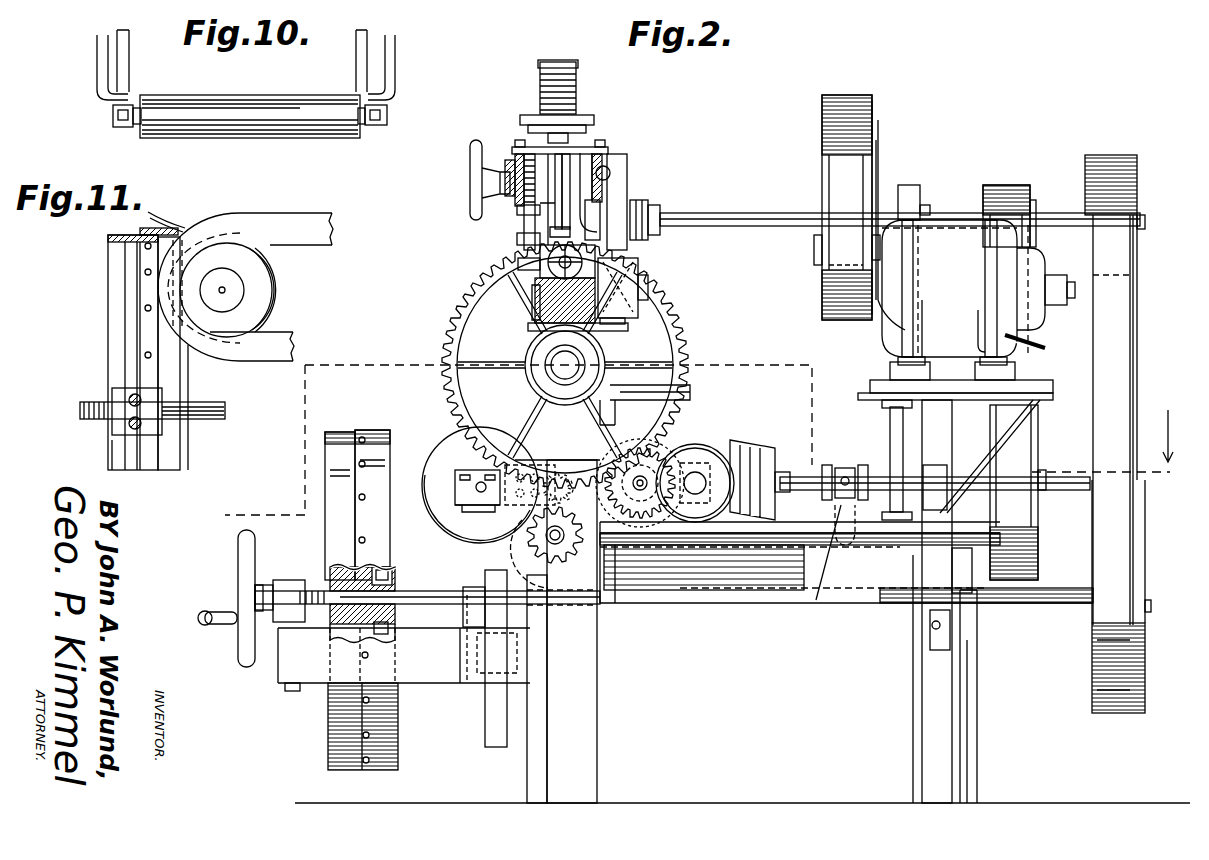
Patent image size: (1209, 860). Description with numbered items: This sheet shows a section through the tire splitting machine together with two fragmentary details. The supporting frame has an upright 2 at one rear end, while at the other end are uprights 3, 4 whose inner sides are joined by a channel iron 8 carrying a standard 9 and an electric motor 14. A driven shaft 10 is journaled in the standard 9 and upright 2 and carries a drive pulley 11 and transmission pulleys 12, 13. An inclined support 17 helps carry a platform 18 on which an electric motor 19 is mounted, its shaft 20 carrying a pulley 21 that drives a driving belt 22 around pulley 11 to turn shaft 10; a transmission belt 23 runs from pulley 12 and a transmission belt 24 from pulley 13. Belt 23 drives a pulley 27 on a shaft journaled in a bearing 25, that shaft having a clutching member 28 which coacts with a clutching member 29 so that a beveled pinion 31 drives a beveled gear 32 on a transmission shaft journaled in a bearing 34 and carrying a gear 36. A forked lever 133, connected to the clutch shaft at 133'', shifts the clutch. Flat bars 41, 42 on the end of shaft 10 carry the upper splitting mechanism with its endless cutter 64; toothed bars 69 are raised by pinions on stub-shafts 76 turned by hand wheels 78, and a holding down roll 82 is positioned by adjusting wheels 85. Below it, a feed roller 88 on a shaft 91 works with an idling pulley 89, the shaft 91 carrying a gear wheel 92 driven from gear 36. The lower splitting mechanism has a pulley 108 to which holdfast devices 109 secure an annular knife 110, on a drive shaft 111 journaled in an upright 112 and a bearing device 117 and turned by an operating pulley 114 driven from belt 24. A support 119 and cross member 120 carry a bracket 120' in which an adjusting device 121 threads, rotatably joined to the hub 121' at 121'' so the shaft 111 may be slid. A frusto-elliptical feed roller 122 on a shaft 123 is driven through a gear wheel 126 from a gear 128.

In FIG. 2, the upright 2 is at (916, 411).
In FIG. 2, the upright 3 is at (693, 444).
In FIG. 2, the upright 4 is at (585, 661).
In FIG. 2, the channel iron 8 is at (690, 386).
In FIG. 2, the standard 9 is at (627, 176).
In FIG. 2, the driven shaft 10 is at (736, 213).
In FIG. 2, the drive pulley 11 is at (873, 148).
In FIG. 2, the transmission pulley 12 is at (1032, 200).
In FIG. 2, the transmission pulley 13 is at (1135, 178).
In FIG. 2, the electric motor 14 is at (640, 286).
In FIG. 2, the support 17 is at (993, 452).
In FIG. 2, the platform 18 is at (1053, 396).
In FIG. 2, the electric motor 19 is at (948, 240).
In FIG. 2, the motor shaft 20 is at (880, 322).
In FIG. 2, the pulley 21 is at (824, 308).
In FIG. 2, the driving belt 22 is at (835, 135).
In FIG. 2, the transmission belt 23 is at (1005, 185).
In FIG. 2, the transmission belt 24 is at (1106, 158).
In FIG. 2, the bearing 25 is at (941, 466).
In FIG. 2, the pulley 27 is at (1030, 536).
In FIG. 2, the clutching member 28 is at (778, 465).
In FIG. 2, the clutching member 29 is at (746, 440).
In FIG. 2, the beveled pinion 31 is at (699, 462).
In FIG. 2, the beveled gear 32 is at (662, 458).
In FIG. 2, the bearing 34 is at (647, 466).
In FIG. 2, the gear 36 is at (650, 440).
In FIG. 2, the flat bar 41 is at (512, 160).
In FIG. 2, the flat bar 42 is at (604, 160).
In FIG. 2, the endless cutter 64 is at (560, 62).
In FIG. 10, the toothed bar 69 is at (128, 60).
In FIG. 2, the toothed bar 69 is at (523, 250).
In FIG. 2, the stub-shaft 76 is at (512, 205).
In FIG. 2, the hand wheel 78 is at (470, 176).
In FIG. 10, the holding down roll 82 is at (268, 118).
In FIG. 2, the holding down roll 82 is at (628, 256).
In FIG. 2, the adjusting wheel 85 is at (592, 120).
In FIG. 2, the feed roller 88 is at (468, 325).
In FIG. 2, the idling pulley 89 is at (700, 510).
In FIG. 2, the shaft 91 is at (568, 365).
In FIG. 2, the gear wheel 92 is at (672, 330).
In FIG. 11, the pulley 108 is at (118, 264).
In FIG. 2, the pulley 108 is at (340, 434).
In FIG. 11, the holdfast device 109 is at (146, 273).
In FIG. 2, the holdfast device 109 is at (366, 540).
In FIG. 11, the annular knife 110 is at (162, 233).
In FIG. 2, the annular knife 110 is at (371, 432).
In FIG. 11, the drive shaft 111 is at (212, 408).
In FIG. 2, the drive shaft 111 is at (430, 592).
In FIG. 2, the upright 112 is at (968, 688).
In FIG. 2, the operating pulley 114 is at (1093, 650).
In FIG. 2, the bearing device 117 is at (477, 614).
In FIG. 2, the support 119 is at (433, 668).
In FIG. 2, the cross member 120 is at (377, 663).
In FIG. 2, the bracket 120' is at (253, 598).
In FIG. 2, the adjusting device 121 is at (414, 538).
In FIG. 2, the hub 121' is at (337, 612).
In FIG. 2, the rotatable connection 121'' is at (386, 628).
In FIG. 11, the feed roller 122 is at (263, 287).
In FIG. 2, the feed roller 122 is at (465, 440).
In FIG. 2, the shaft 123 is at (477, 493).
In FIG. 2, the gear wheel 126 is at (445, 430).
In FIG. 2, the gear 128 is at (525, 558).
In FIG. 2, the forked lever 133 is at (830, 569).
In FIG. 2, the lever connection 133'' is at (845, 464).